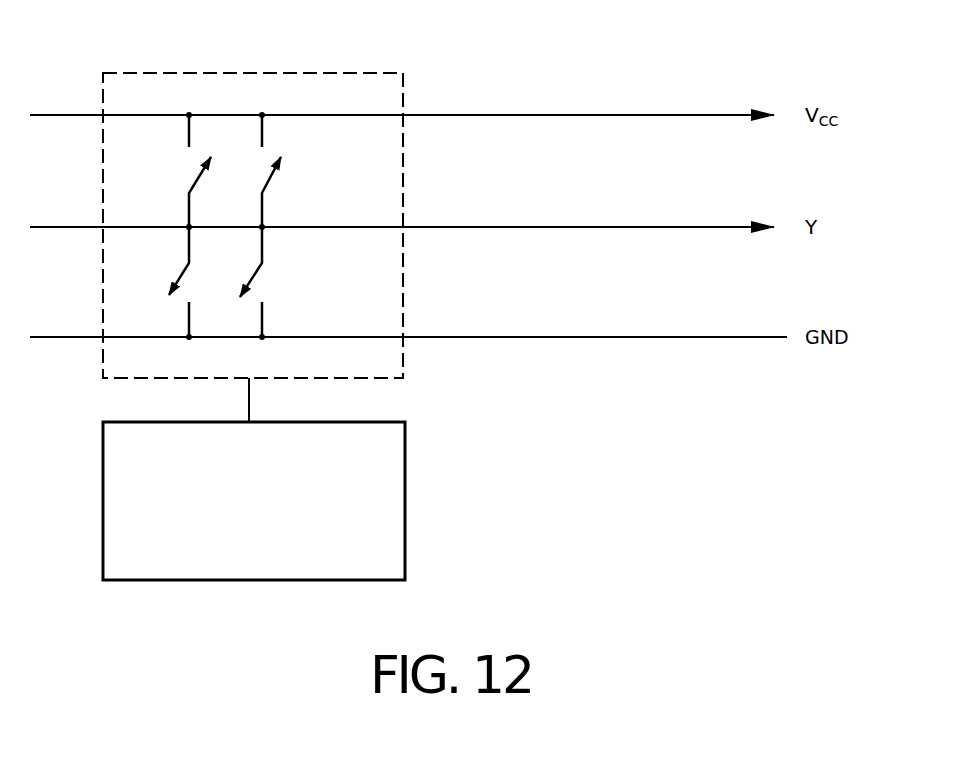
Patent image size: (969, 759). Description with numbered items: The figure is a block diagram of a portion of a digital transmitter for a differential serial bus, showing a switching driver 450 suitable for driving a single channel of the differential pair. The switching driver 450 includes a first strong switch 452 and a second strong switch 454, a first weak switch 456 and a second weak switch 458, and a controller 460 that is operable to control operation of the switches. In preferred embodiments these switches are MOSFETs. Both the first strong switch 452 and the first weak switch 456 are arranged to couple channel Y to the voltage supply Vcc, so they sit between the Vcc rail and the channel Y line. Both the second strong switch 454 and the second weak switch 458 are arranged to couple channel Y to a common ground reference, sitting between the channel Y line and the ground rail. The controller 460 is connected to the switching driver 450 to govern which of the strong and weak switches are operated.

The switching driver 450 is at (243, 73).
The first strong switch 452 is at (178, 162).
The second strong switch 454 is at (178, 298).
The first weak switch 456 is at (317, 148).
The second weak switch 458 is at (260, 287).
The controller 460 is at (407, 505).